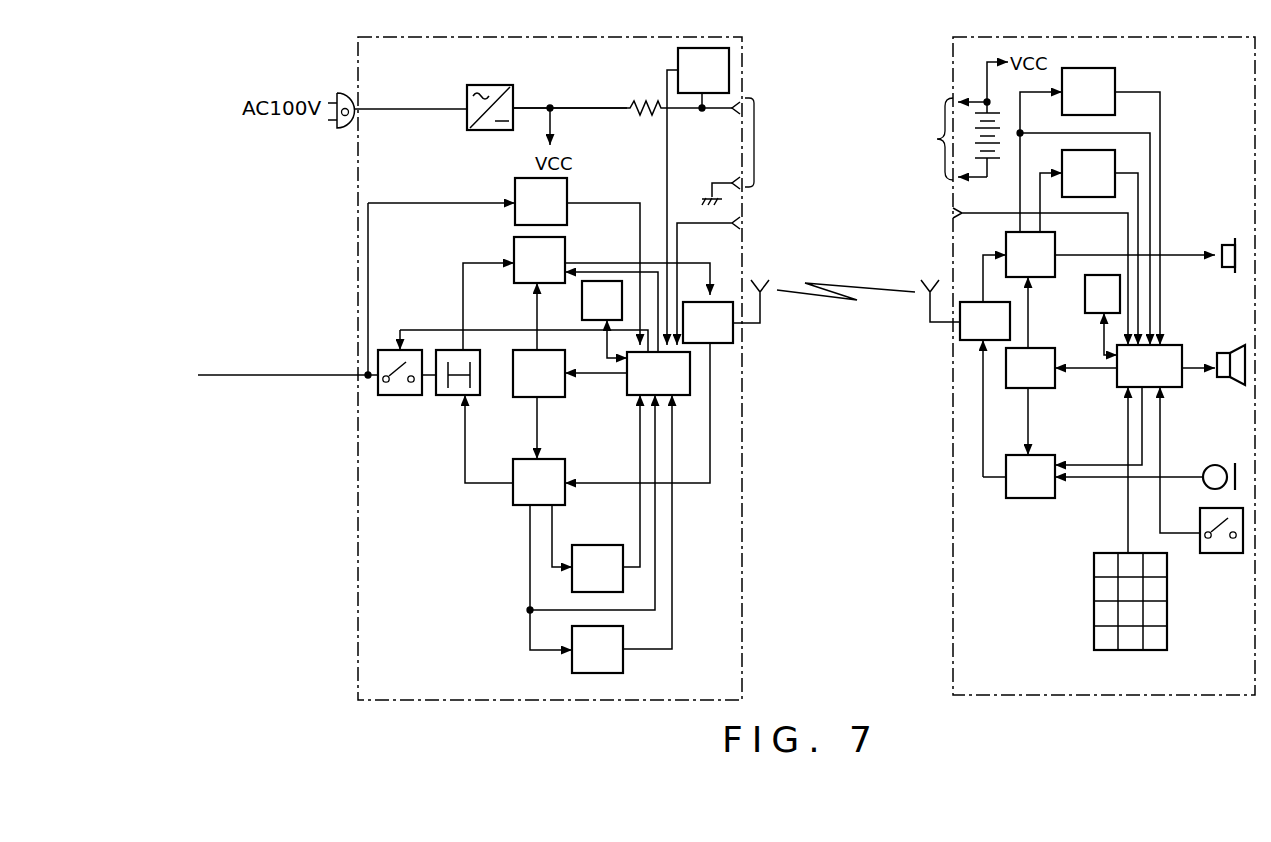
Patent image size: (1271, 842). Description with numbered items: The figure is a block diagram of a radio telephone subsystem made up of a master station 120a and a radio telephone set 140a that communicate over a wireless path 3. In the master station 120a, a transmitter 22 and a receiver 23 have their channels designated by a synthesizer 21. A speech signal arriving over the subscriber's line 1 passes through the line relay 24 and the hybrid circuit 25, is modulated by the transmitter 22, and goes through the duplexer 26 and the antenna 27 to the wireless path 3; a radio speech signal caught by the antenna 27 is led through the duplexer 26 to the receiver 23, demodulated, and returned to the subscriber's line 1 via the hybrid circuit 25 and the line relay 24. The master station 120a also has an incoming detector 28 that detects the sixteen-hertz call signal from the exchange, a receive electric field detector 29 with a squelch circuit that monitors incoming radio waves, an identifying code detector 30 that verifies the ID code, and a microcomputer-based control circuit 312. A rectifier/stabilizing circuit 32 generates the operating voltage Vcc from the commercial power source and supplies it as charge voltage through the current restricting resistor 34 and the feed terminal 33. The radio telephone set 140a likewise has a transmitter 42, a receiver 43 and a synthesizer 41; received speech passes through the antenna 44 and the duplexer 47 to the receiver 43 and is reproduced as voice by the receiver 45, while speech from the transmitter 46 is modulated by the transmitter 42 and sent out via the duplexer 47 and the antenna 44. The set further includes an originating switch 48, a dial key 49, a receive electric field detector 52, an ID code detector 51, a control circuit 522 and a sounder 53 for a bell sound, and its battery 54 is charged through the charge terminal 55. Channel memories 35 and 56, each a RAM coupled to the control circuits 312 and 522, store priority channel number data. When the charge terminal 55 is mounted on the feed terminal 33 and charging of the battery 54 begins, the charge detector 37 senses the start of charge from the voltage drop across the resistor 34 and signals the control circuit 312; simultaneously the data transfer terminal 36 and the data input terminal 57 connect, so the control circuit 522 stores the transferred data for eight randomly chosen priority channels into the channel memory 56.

The subscriber's line 1 is at (243, 374).
The wireless path 3 is at (839, 284).
The synthesizer 21 is at (566, 364).
The transmitter 22 is at (566, 246).
The receiver 23 is at (566, 472).
The line relay 24 is at (407, 397).
The hybrid circuit 25 is at (472, 397).
The duplexer 26 is at (722, 300).
The antenna 27 is at (761, 280).
The incoming detector 28 is at (568, 187).
The receive electric field detector 29 is at (612, 545).
The identifying code detector 30 is at (624, 668).
The rectifier/stabilizing circuit 32 is at (491, 85).
The feed terminal 33 is at (754, 140).
The current restricting resistor 34 is at (648, 115).
The channel memory 35 is at (582, 293).
The data transfer terminal 36 is at (742, 224).
The charge detector 37 is at (677, 60).
The synthesizer 41 is at (1046, 390).
The transmitter 42 is at (1030, 499).
The receiver 43 is at (1048, 279).
The antenna 44 is at (926, 282).
The receiver 45 is at (1226, 242).
The transmitter 46 is at (1211, 466).
The duplexer 47 is at (973, 300).
The originating switch 48 is at (1213, 554).
The dial key 49 is at (1130, 651).
The ID code detector 51 is at (1117, 74).
The receive electric field detector 52 is at (1088, 173).
The sounder 53 is at (1238, 386).
The battery 54 is at (998, 120).
The charge terminal 55 is at (938, 137).
The channel memory 56 is at (1092, 316).
The data input terminal 57 is at (951, 213).
The master station 120a is at (745, 57).
The radio telephone set 140a is at (951, 63).
The control circuit 312 is at (628, 396).
The control circuit 522 is at (1196, 329).